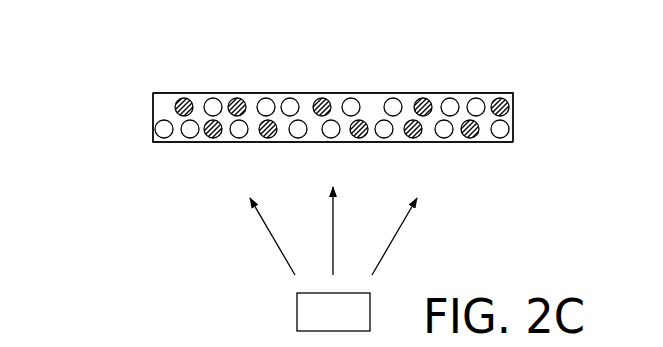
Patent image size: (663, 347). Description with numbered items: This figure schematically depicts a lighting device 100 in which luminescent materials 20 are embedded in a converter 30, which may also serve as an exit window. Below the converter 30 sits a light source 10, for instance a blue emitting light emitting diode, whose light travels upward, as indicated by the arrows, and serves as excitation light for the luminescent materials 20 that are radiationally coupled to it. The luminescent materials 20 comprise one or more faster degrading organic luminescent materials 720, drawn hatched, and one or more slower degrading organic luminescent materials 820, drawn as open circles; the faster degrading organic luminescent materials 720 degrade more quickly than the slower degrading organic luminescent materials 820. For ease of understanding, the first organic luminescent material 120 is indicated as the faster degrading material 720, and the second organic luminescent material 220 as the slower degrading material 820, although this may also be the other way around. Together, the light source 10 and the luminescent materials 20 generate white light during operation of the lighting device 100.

The lighting device 100 is at (128, 75).
The luminescent materials 20 is at (137, 123).
The converter 30 is at (537, 112).
The first organic luminescent material 120 is at (182, 99).
The faster degrading organic luminescent material 720 is at (193, 99).
The slower degrading organic luminescent material 820 is at (232, 140).
The second organic luminescent material 220 is at (497, 141).
The light source 10 is at (288, 313).